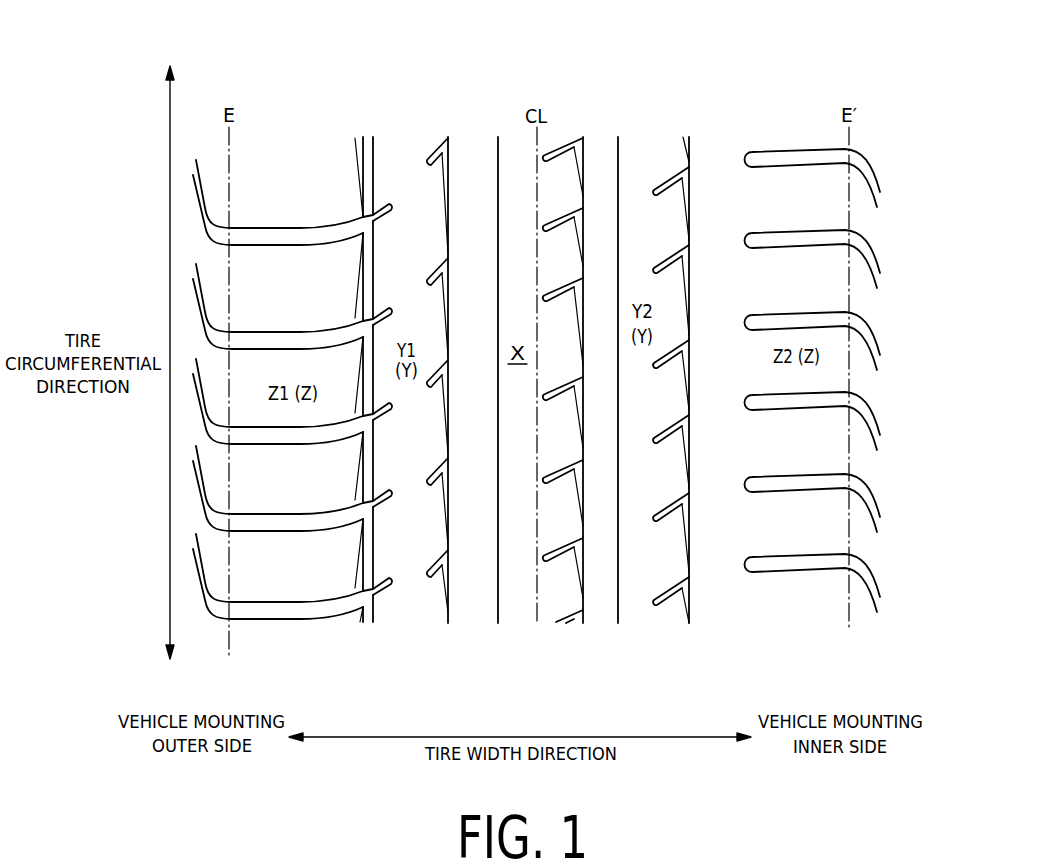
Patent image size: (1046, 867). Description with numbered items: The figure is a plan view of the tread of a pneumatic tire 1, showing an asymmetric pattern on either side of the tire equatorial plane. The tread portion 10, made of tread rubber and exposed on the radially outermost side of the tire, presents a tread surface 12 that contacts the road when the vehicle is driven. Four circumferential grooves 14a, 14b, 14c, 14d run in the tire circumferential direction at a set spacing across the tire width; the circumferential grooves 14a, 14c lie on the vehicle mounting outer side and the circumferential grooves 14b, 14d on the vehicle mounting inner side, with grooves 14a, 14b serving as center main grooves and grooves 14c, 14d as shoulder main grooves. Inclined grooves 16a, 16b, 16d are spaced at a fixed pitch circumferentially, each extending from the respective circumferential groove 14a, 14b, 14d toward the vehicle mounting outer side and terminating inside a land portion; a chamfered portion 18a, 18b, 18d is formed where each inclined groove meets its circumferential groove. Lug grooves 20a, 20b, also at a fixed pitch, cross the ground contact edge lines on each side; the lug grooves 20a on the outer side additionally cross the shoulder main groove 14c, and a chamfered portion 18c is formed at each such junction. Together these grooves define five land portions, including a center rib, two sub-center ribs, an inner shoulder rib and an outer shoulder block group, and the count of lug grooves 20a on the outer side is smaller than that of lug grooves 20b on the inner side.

The pneumatic tire 1 is at (453, 107).
The tread portion 10 is at (485, 107).
The tread surface 12 is at (305, 175).
The circumferential groove 14a is at (468, 612).
The circumferential groove 14b is at (600, 612).
The circumferential groove 14c is at (368, 622).
The circumferential groove 14d is at (708, 612).
The inclined groove 16a is at (427, 385).
The inclined groove 16b is at (557, 398).
The inclined groove 16d is at (652, 368).
The chamfered portion 18a is at (442, 482).
The chamfered portion 18b is at (572, 475).
The chamfered portion 18c is at (357, 527).
The chamfered portion 18d is at (682, 443).
The lug groove 20a is at (290, 613).
The lug groove 20b is at (812, 558).